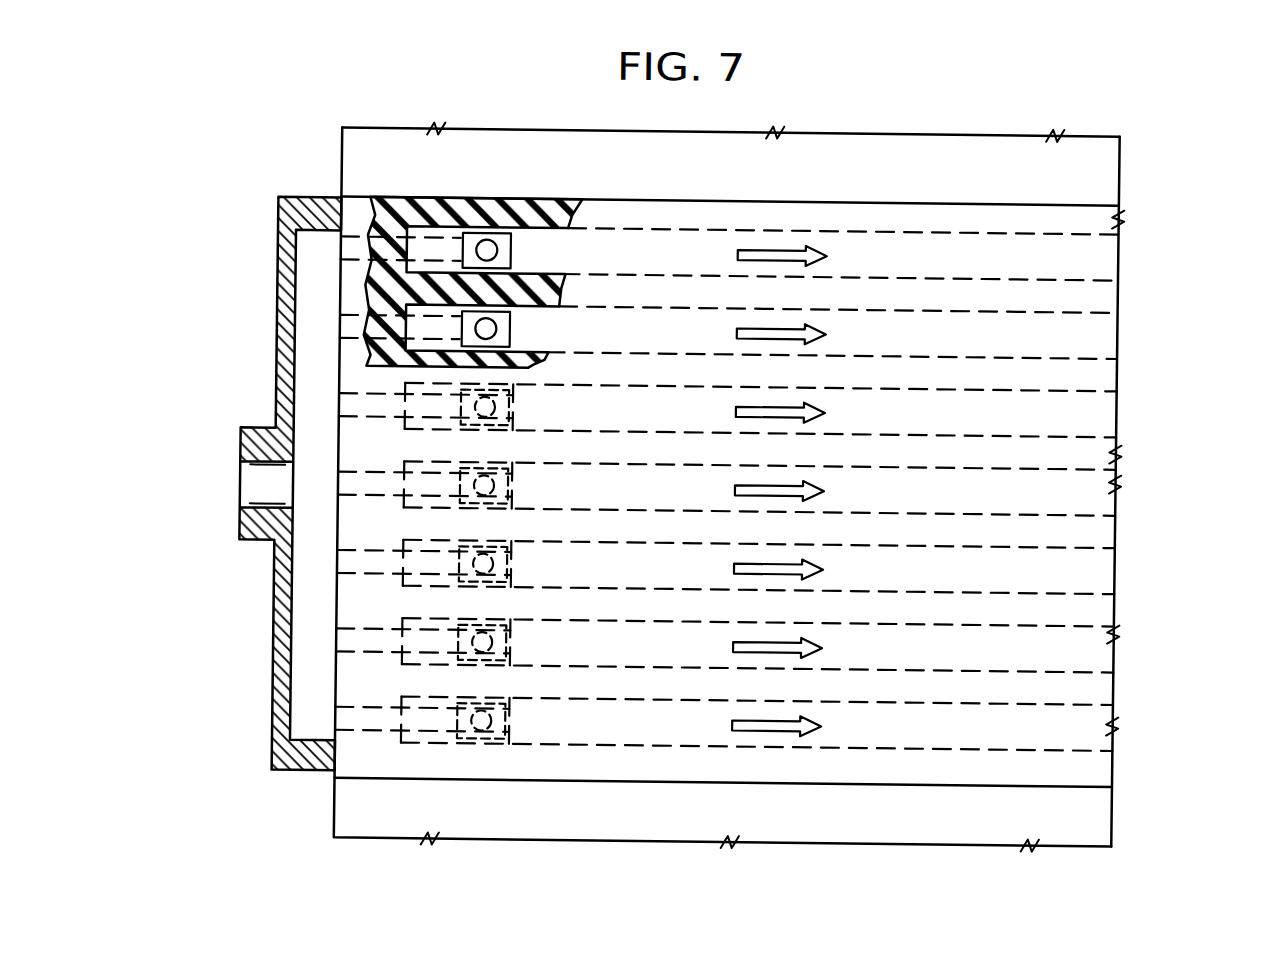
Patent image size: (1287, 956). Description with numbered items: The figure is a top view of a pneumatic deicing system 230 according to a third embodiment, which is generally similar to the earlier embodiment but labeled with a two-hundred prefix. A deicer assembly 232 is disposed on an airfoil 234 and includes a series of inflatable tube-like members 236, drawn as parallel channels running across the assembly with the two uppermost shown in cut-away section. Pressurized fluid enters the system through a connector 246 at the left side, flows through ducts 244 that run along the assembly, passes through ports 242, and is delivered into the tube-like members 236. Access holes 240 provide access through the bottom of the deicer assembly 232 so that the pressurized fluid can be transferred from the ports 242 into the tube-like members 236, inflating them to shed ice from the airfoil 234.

The pneumatic deicing system 230 is at (1135, 210).
The deicer assembly 232 is at (1117, 653).
The airfoil 234 is at (878, 131).
The inflatable tube-like members 236 is at (540, 240).
The access holes 240 is at (498, 238).
The ports 242 is at (482, 243).
The ducts 244 is at (350, 242).
The connector 246 is at (301, 772).